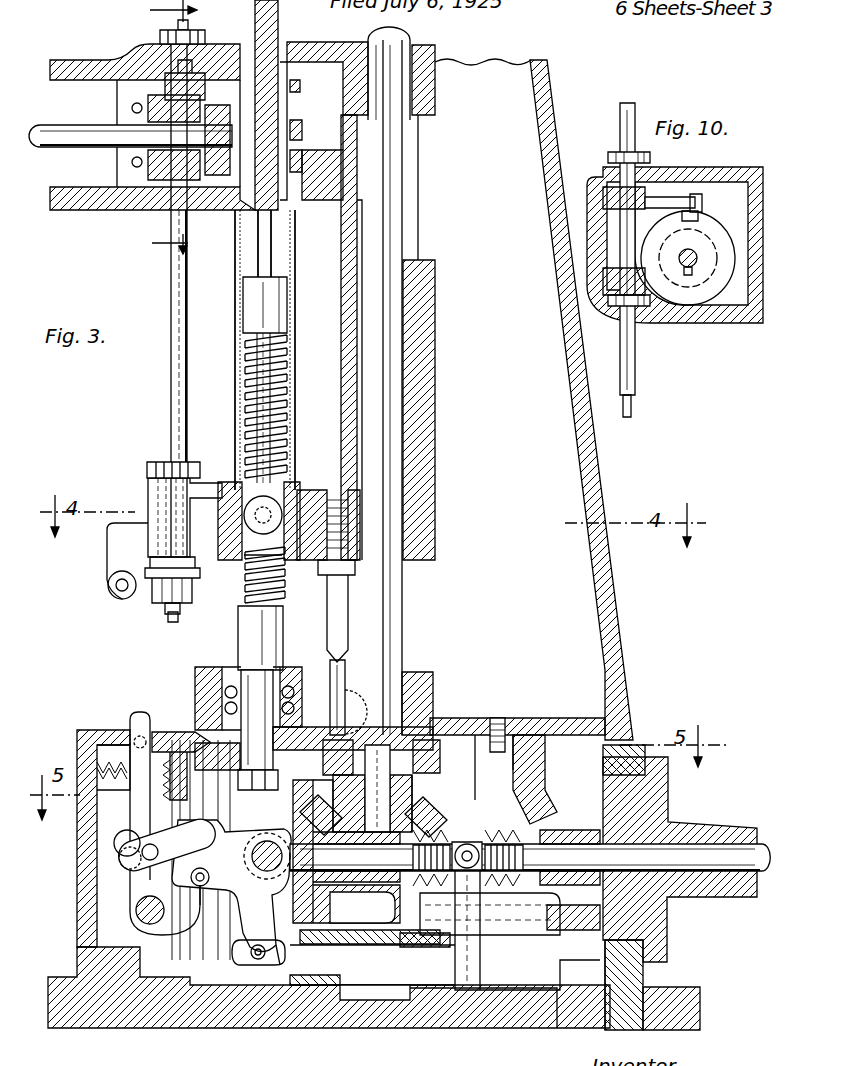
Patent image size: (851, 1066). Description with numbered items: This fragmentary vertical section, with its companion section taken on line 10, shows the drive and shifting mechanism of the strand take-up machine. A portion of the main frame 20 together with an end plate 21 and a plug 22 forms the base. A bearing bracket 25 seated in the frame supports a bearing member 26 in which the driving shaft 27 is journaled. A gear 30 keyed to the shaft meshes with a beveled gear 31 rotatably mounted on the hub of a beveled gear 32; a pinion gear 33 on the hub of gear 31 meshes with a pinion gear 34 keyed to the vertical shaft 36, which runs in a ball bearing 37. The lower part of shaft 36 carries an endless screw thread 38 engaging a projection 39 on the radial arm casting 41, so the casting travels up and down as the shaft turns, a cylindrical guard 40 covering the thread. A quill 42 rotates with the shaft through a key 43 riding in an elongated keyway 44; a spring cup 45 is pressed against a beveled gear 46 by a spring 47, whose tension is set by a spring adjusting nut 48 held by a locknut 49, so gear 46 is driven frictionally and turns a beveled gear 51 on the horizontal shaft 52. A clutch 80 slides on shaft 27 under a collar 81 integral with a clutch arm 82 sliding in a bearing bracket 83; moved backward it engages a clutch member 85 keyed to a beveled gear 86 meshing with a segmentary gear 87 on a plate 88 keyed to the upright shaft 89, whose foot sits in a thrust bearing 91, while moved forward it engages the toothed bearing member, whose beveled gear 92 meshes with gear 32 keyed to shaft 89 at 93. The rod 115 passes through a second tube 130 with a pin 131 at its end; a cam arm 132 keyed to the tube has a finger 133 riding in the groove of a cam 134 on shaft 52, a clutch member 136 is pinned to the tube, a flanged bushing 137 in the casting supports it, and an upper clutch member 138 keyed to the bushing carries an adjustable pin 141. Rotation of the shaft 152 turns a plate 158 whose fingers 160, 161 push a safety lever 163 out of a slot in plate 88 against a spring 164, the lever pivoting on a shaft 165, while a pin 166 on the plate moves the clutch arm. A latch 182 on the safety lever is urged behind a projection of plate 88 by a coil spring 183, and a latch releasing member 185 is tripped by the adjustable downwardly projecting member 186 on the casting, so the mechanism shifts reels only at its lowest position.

In FIG. 3, the section line 10— 10 is at (164, 127).
In FIG. 3, the main frame 20 is at (622, 620).
In FIG. 3, the end plate 21 is at (502, 1015).
In FIG. 3, the plug 22 is at (366, 1025).
In FIG. 3, the bearing bracket 25 is at (714, 836).
In FIG. 3, the bearing member 26 is at (372, 936).
In FIG. 3, the driving shaft 27 is at (757, 858).
In FIG. 3, the gear 30 is at (320, 941).
In FIG. 3, the beveled gear 31 is at (446, 792).
In FIG. 3, the beveled gear 32 is at (380, 672).
In FIG. 3, the pinion gear 33 is at (497, 716).
In FIG. 3, the pinion gear 34 is at (310, 822).
In FIG. 3, the shaft 36 is at (278, 42).
In FIG. 3, the ball bearing 37 is at (196, 692).
In FIG. 3, the endless screw thread 38 is at (292, 395).
In FIG. 3, the projection 39 is at (295, 485).
In FIG. 3, the cylindrical guard 40 is at (237, 293).
In FIG. 3, the radial arm casting 41 is at (108, 56).
In FIG. 3, the quill 42 is at (320, 200).
In FIG. 3, the key 43 is at (246, 214).
In FIG. 3, the elongated keyway 44 is at (368, 40).
In FIG. 3, the spring cup 45 is at (306, 157).
In FIG. 3, the beveled gear 46 is at (325, 160).
In FIG. 3, the spring 47 is at (310, 120).
In FIG. 3, the spring adjusting nut 48 is at (303, 130).
In FIG. 3, the locknut 49 is at (300, 93).
In FIG. 3, the beveled gear 51 is at (152, 205).
In FIG. 3, the horizontal shaft 52 is at (66, 135).
In FIG. 10, the horizontal shaft 52 is at (700, 264).
In FIG. 3, the clutch 80 is at (507, 917).
In FIG. 3, the collar 81 is at (480, 842).
In FIG. 3, the clutch arm 82 is at (480, 963).
In FIG. 3, the bearing bracket 83 is at (447, 1015).
In FIG. 3, the clutch member 85 is at (582, 985).
In FIG. 3, the beveled gear 86 is at (575, 826).
In FIG. 3, the segmentary gear 87 is at (538, 774).
In FIG. 3, the plate 88 is at (553, 718).
In FIG. 3, the upright shaft 89 is at (372, 628).
In FIG. 3, the thrust bearing 91 is at (432, 826).
In FIG. 3, the beveled gear 92 is at (298, 926).
In FIG. 3, the keying point 93 is at (437, 745).
In FIG. 3, the rod 115 is at (190, 28).
In FIG. 10, the rod 115 is at (632, 414).
In FIG. 3, the second tube 130 is at (171, 283).
In FIG. 10, the second tube 130 is at (637, 383).
In FIG. 3, the pin 131 is at (182, 606).
In FIG. 3, the cam arm 132 is at (165, 79).
In FIG. 10, the cam arm 132 is at (660, 203).
In FIG. 3, the finger 133 is at (148, 104).
In FIG. 10, the finger 133 is at (694, 218).
In FIG. 3, the cam 134 is at (128, 205).
In FIG. 10, the cam 134 is at (696, 325).
In FIG. 3, the clutch member 136 is at (196, 580).
In FIG. 3, the flanged bushing 137 is at (147, 470).
In FIG. 3, the upper clutch member 138 is at (128, 548).
In FIG. 3, the pin 141 is at (108, 590).
In FIG. 3, the shaft 152 is at (274, 840).
In FIG. 3, the plate 158 is at (372, 964).
In FIG. 3, the finger 160 is at (174, 840).
In FIG. 3, the finger 161 is at (180, 882).
In FIG. 3, the safety lever 163 is at (132, 800).
In FIG. 3, the spring 164 is at (120, 735).
In FIG. 3, the shaft 165 is at (148, 924).
In FIG. 3, the pin 166 is at (270, 953).
In FIG. 3, the latch 182 is at (155, 732).
In FIG. 3, the coil spring 183 is at (116, 775).
In FIG. 3, the latch releasing member 185 is at (330, 680).
In FIG. 3, the downwardly projecting member 186 is at (335, 600).